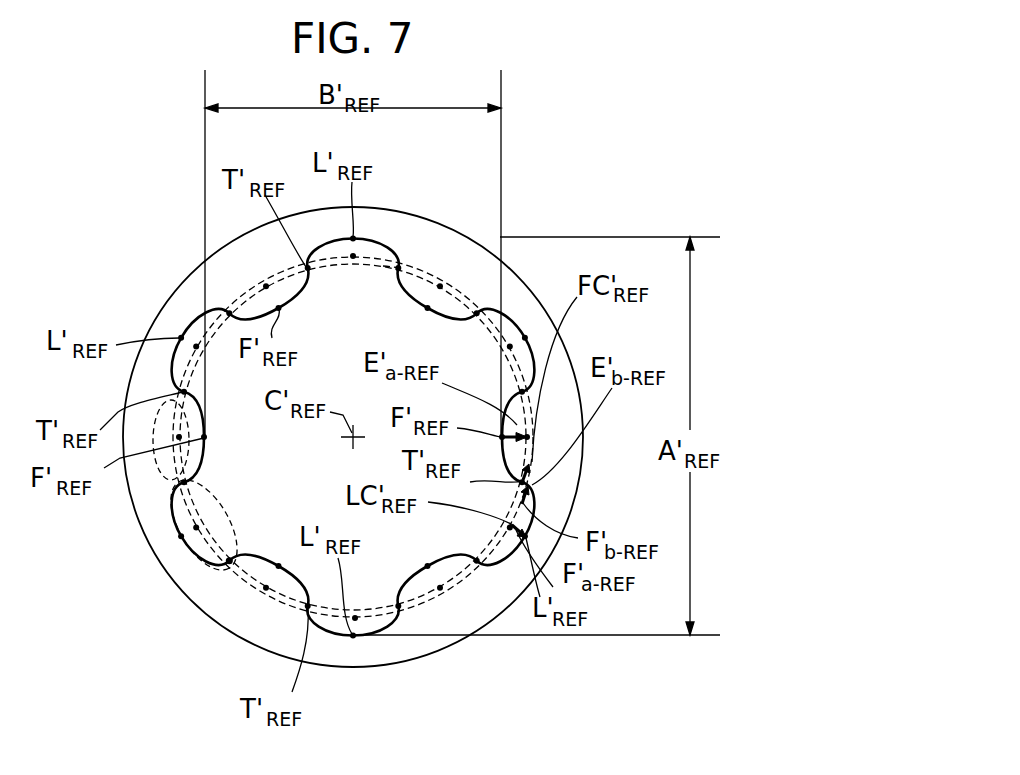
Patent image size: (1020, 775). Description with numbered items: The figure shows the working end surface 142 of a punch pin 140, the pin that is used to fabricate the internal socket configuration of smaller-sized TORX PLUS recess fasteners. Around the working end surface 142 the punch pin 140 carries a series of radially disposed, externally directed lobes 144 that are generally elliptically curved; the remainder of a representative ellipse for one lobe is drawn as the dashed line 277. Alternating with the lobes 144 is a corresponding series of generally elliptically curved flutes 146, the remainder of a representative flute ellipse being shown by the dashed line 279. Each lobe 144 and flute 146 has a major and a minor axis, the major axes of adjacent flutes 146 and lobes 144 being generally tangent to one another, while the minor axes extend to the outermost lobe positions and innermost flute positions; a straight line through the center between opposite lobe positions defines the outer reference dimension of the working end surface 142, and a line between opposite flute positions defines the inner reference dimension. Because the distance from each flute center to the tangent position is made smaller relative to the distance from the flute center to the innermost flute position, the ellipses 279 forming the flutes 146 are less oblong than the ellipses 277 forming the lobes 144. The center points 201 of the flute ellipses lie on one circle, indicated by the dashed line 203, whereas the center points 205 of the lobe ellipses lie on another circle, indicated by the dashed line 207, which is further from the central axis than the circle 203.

The punch pin 140 is at (431, 212).
The working end surface 142 is at (399, 606).
The lobes 144 is at (181, 536).
The flutes 146 is at (267, 588).
The center points of the flute ellipses 201 is at (266, 287).
The circle of flute ellipse centers 203 is at (390, 268).
The center points of the lobe ellipses 205 is at (353, 256).
The circle of lobe ellipse centers 207 is at (229, 562).
The lobe ellipse 277 is at (226, 496).
The flute ellipse 279 is at (160, 398).